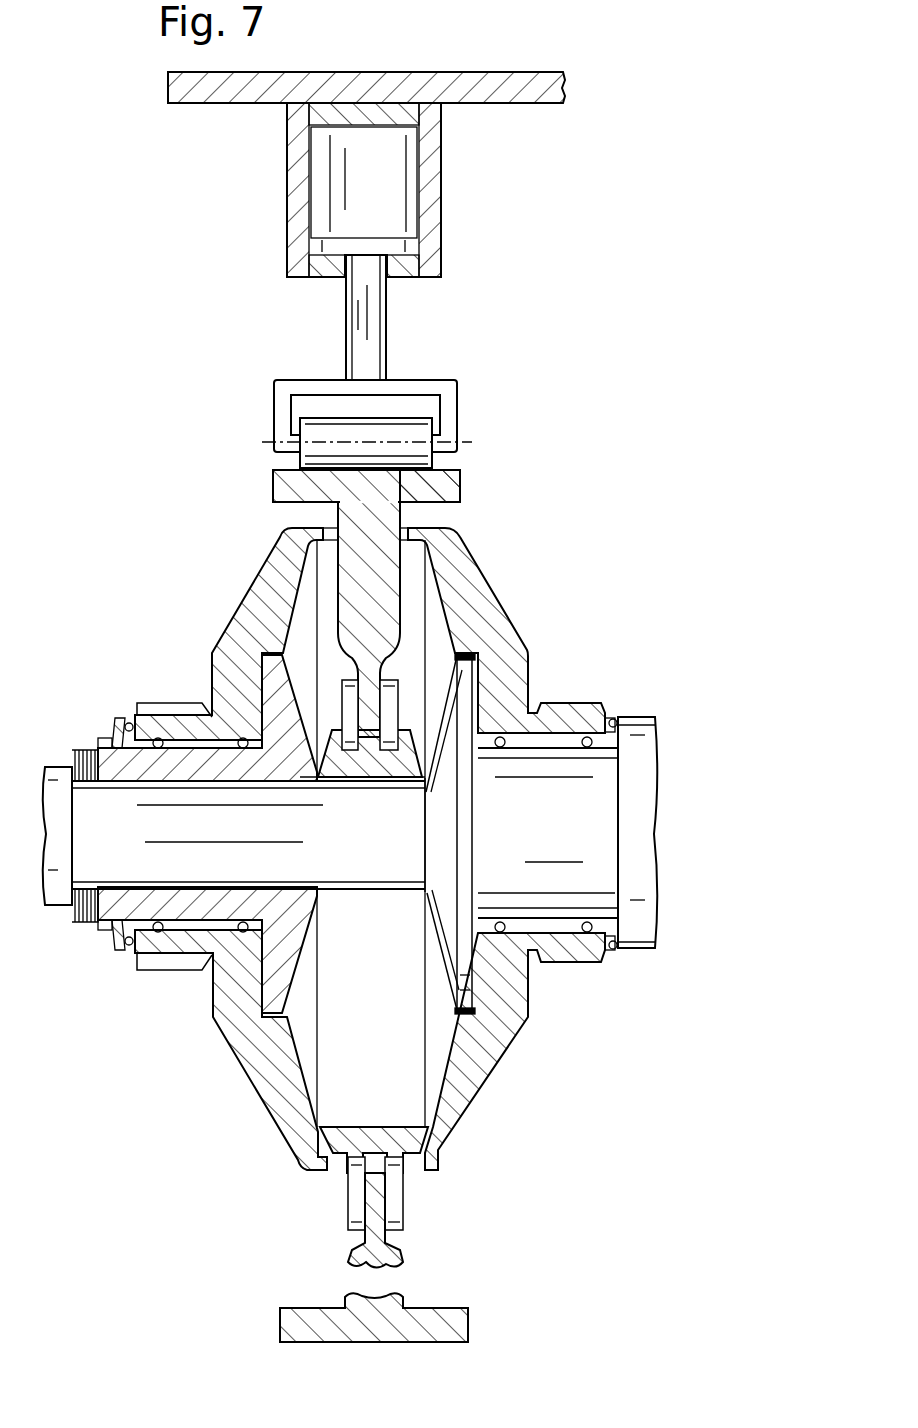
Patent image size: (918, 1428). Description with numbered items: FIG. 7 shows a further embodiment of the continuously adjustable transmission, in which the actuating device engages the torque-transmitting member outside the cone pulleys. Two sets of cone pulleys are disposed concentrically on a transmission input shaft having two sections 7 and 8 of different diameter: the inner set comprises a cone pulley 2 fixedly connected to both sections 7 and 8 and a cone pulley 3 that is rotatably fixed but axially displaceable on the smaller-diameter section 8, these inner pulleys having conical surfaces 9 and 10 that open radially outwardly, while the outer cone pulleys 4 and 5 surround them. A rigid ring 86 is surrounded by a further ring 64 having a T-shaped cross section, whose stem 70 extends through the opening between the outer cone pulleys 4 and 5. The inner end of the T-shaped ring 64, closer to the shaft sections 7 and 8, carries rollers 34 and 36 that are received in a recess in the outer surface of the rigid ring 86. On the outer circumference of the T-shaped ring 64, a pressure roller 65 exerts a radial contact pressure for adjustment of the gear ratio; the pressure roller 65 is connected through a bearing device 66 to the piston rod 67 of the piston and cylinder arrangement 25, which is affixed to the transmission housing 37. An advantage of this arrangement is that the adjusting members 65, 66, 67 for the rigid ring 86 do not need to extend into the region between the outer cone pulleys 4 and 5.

The transmission housing 37 is at (548, 92).
The piston and cylinder arrangement 25 is at (433, 203).
The piston rod 67 is at (373, 325).
The bearing device 66 is at (430, 387).
The pressure roller 65 is at (418, 455).
The T-shaped ring 64 is at (432, 488).
The plunger stem 70 is at (393, 575).
The outer cone pulley 4 is at (247, 600).
The outer cone pulley 5 is at (513, 628).
The running roller 34 is at (350, 703).
The running roller 36 is at (388, 708).
The input shaft section 7 is at (590, 758).
The input shaft section 8 is at (127, 872).
The cone pulley 3 is at (277, 973).
The conical surface 10 is at (300, 972).
The conical surface 9 is at (447, 978).
The cone pulley 2 is at (450, 938).
The rigid ring 86 is at (330, 1177).